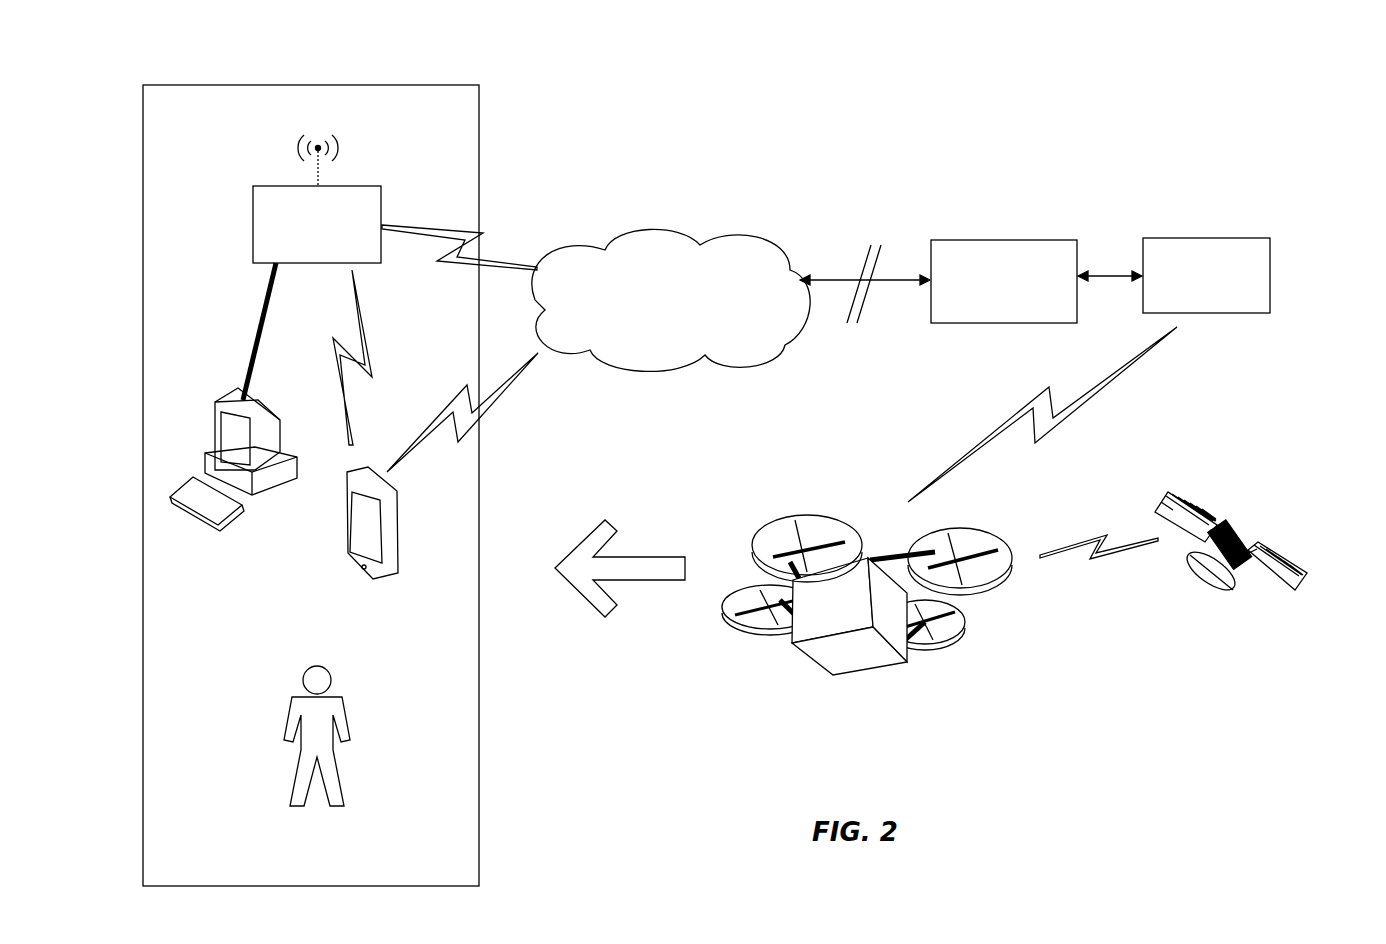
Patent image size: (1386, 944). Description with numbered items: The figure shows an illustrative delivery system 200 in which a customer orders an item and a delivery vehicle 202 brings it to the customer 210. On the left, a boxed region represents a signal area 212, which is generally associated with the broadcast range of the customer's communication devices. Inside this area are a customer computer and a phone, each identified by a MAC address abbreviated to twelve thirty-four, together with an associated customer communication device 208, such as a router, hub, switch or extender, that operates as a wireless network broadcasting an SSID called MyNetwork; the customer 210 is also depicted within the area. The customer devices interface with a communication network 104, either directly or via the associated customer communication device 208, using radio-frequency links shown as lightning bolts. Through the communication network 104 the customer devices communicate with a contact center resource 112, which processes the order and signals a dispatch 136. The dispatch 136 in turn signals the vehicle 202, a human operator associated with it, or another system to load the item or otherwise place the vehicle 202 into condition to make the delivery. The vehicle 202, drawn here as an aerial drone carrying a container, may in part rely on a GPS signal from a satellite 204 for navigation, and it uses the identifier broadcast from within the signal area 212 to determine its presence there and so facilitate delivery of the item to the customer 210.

The delivery system 200 is at (1284, 82).
The signal area 212 is at (479, 124).
The associated customer communication device 208 is at (352, 186).
The customer 210 is at (340, 700).
The communication network 104 is at (690, 232).
The contact center resource 112 is at (1012, 240).
The dispatch 136 is at (1208, 238).
The delivery vehicle 202 is at (867, 595).
The satellite 204 is at (1197, 505).